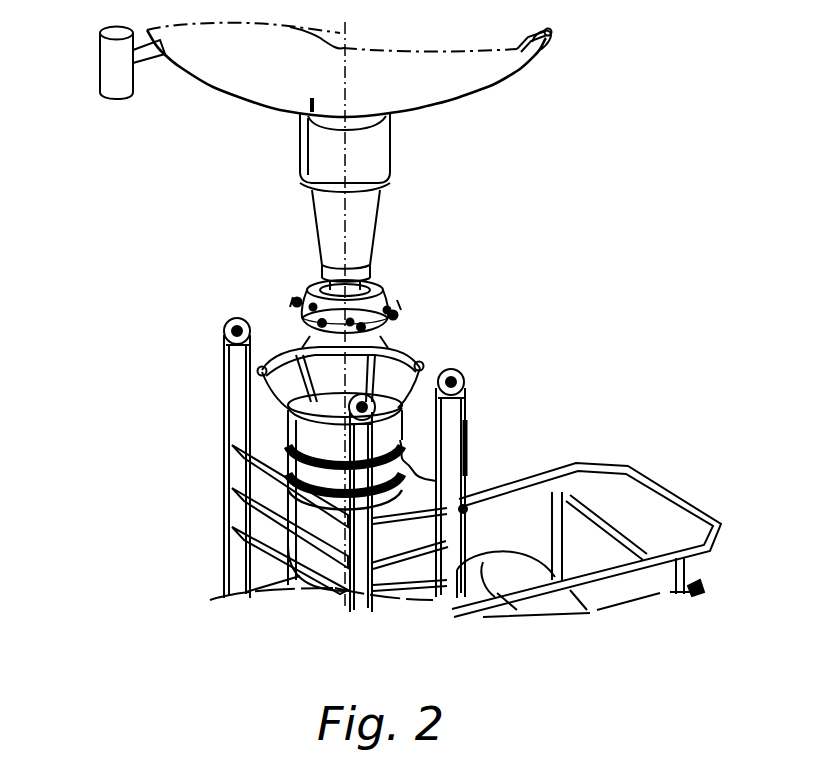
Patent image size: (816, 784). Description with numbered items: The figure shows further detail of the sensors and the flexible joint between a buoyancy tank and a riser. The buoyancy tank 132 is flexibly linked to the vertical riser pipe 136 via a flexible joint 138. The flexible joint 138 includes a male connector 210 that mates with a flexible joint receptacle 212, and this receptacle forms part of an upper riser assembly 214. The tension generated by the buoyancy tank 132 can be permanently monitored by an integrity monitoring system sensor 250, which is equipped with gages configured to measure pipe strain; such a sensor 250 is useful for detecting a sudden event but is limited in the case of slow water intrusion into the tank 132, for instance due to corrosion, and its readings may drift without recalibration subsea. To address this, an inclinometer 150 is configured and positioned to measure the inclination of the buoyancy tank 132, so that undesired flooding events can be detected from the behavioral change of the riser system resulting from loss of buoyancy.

The buoyancy tank 132 is at (455, 83).
The vertical riser pipe 136 is at (558, 605).
The flexible joint 138 is at (407, 335).
The inclinometer 150 is at (120, 92).
The male connector 210 is at (297, 304).
The flexible joint receptacle 212 is at (260, 378).
The upper riser assembly 214 is at (235, 506).
The integrity monitoring system sensor 250 is at (300, 146).